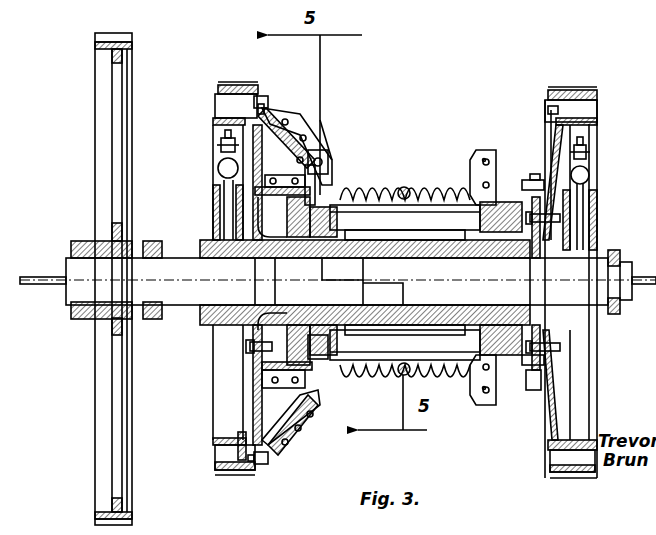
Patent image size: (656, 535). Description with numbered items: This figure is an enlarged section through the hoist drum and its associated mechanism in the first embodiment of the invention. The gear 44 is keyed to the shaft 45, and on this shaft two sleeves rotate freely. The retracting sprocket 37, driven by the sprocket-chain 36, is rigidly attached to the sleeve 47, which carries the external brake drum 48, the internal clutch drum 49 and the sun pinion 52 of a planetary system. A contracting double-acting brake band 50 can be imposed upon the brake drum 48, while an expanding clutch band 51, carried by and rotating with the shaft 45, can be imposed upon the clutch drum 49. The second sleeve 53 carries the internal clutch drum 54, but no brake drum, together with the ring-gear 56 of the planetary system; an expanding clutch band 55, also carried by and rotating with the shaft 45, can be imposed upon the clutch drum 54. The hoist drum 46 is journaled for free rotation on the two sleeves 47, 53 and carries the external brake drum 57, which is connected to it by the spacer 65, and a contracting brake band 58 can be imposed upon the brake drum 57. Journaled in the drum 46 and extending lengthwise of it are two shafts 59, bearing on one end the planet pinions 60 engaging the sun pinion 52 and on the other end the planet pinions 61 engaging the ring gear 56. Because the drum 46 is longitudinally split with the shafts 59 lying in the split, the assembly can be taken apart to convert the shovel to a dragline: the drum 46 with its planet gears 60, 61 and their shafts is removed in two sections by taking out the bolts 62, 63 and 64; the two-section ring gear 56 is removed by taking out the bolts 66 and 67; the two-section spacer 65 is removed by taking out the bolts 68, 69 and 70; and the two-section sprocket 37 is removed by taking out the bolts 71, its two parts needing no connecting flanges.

The sprocket-chain 36 is at (524, 179).
The retracting sprocket 37 is at (532, 178).
The gear 44 is at (95, 174).
The shaft 45 is at (70, 258).
The hoist drum 46 is at (373, 202).
The sleeve 47 is at (450, 270).
The external brake drum 48 is at (597, 100).
The internal clutch drum 49 is at (597, 122).
The contracting double-acting brake band 50 is at (590, 88).
The expanding clutch band 51 is at (590, 138).
The sun pinion 52 is at (526, 258).
The sleeve 53 is at (332, 262).
The internal clutch drum 54 is at (212, 116).
The expanding clutch band 55 is at (216, 139).
The ring-gear 56 is at (284, 175).
The external brake drum 57 is at (214, 100).
The contracting brake band 58 is at (236, 84).
The shafts 59 is at (410, 196).
The planet pinions 60 is at (480, 190).
The planet pinions 61 is at (338, 146).
The bolts 62 is at (488, 158).
The bolts 63 is at (484, 160).
The bolts 64 is at (404, 187).
The spacer 65 is at (280, 106).
The bolts 66 is at (250, 347).
The bolts 67 is at (262, 380).
The bolts 68 is at (262, 98).
The bolts 69 is at (322, 106).
The bolts 70 is at (320, 127).
The bolts 71 is at (560, 218).